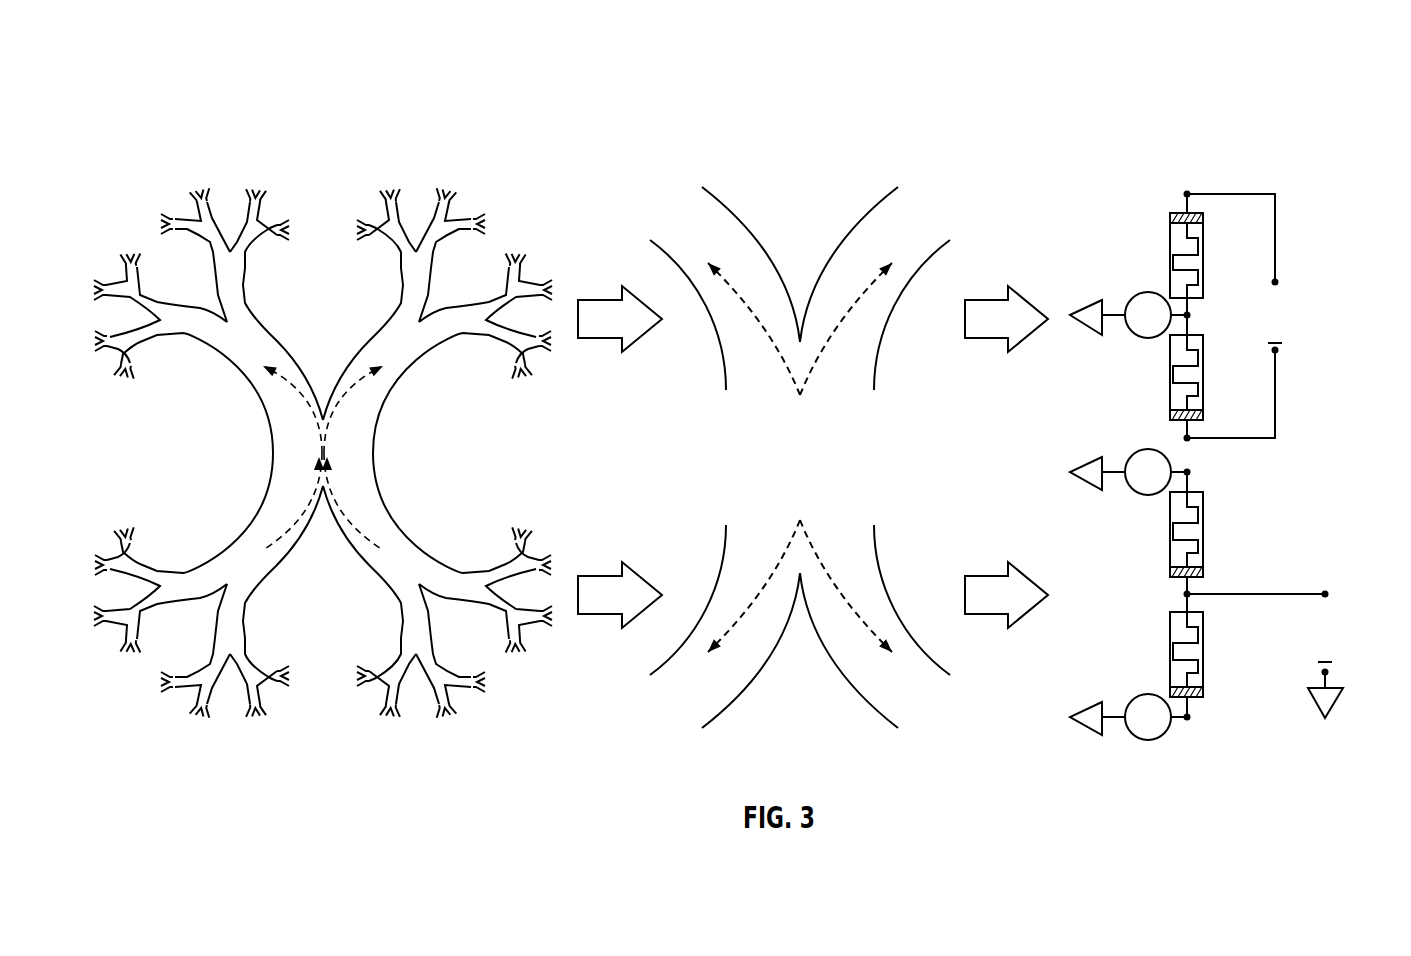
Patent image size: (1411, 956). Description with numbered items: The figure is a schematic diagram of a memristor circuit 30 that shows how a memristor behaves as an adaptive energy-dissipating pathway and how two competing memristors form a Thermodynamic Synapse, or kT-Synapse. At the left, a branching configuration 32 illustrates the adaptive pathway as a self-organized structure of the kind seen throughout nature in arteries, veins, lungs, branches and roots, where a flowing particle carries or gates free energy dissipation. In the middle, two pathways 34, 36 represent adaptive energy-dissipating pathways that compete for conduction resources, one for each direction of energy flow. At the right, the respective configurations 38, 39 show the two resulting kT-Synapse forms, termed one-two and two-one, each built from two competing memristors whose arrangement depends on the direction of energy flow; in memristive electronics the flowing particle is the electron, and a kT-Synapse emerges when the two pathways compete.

The memristor circuit 30 is at (1320, 85).
The configuration 32 is at (500, 157).
The pathway 34 is at (896, 158).
The pathway 36 is at (897, 753).
The configuration 38 is at (1298, 160).
The configuration 39 is at (1298, 475).